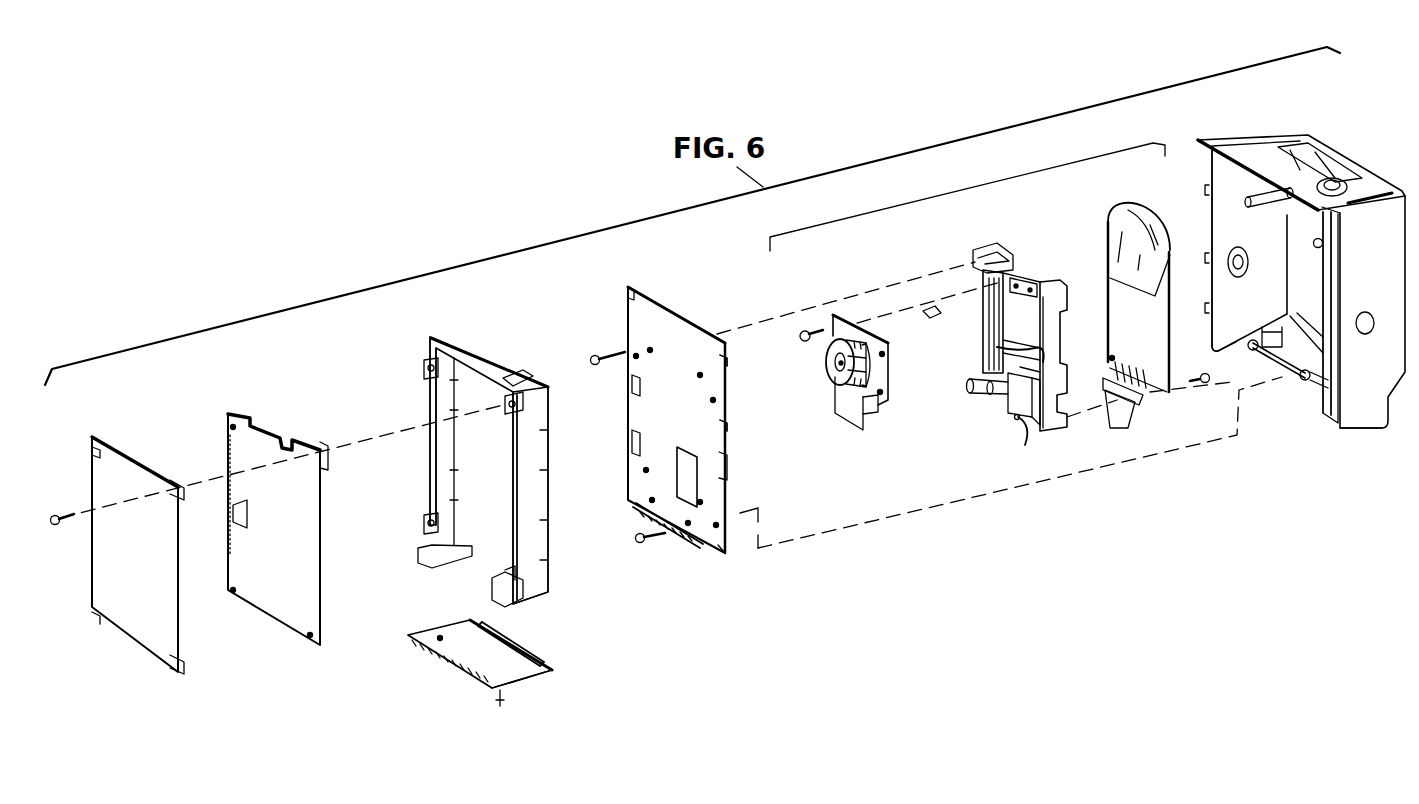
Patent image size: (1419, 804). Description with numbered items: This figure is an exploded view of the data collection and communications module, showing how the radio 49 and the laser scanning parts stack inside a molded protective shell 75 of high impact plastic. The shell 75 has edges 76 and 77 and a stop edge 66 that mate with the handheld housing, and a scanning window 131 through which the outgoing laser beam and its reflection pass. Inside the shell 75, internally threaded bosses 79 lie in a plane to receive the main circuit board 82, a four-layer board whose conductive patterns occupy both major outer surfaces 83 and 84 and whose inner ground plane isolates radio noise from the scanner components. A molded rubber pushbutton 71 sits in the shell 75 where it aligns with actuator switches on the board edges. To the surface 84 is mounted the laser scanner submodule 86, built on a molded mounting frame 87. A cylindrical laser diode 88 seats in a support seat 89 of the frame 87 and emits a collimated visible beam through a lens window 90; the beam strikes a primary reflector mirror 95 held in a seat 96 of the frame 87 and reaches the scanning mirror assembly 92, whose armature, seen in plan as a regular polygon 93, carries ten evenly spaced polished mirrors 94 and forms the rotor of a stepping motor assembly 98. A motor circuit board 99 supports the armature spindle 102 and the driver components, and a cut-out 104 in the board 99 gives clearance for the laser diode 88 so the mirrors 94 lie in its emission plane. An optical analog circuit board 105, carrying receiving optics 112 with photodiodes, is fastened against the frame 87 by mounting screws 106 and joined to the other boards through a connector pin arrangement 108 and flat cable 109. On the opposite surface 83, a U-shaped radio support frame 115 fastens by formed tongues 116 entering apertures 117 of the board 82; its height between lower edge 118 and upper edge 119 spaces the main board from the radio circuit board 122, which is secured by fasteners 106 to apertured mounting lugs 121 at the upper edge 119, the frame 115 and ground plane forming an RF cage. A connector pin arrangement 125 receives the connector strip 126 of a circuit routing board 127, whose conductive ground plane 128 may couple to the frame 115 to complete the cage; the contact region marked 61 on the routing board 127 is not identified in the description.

The radio 49 is at (284, 385).
The edge connector contacts 61 is at (452, 673).
The stop edge 66 is at (1211, 169).
The pushbutton 71 is at (1368, 333).
The protective shell 75 is at (1382, 187).
The edges 76 is at (1208, 278).
The edges 77 is at (1235, 350).
The internally threaded bosses 79 is at (1254, 340).
The main circuit board 82 is at (668, 318).
The major outer surface 83 is at (650, 296).
The major outer surface 84 is at (694, 321).
The laser scanner submodule 86 is at (981, 184).
The mounting frame 87 is at (1048, 278).
The laser diode 88 is at (1002, 394).
The support seat 89 is at (1015, 420).
The lens window 90 is at (1048, 346).
The scanning mirror assembly 92 is at (890, 366).
The regular polygon 93 is at (826, 366).
The mirrors 94 is at (868, 369).
The primary reflector mirror 95 is at (935, 319).
The seat 96 is at (1003, 264).
The stepping motor assembly 98 is at (795, 355).
The motor circuit board 99 is at (846, 429).
The spindle 102 is at (836, 371).
The cut-out 104 is at (880, 410).
The optical analog circuit board 105 is at (1108, 290).
The mounting screws 106 is at (52, 514).
The circuit board connector pin arrangement 108 is at (1132, 389).
The flat cable 109 is at (1135, 408).
The receiving optics 112 is at (1110, 221).
The radio support frame 115 is at (476, 352).
The formed tongues 116 is at (548, 431).
The apertures 117 is at (630, 296).
The lower edge 118 is at (549, 520).
The upper edge 119 is at (429, 402).
The apertured mounting lugs 121 is at (424, 365).
The circuit board 122 is at (228, 441).
The circuit board connector pin arrangement 125 is at (688, 546).
The circuit board connector strip 126 is at (540, 659).
The circuit routing board 127 is at (432, 630).
The conductive ground plane 128 is at (535, 680).
The scanning window 131 is at (1313, 157).